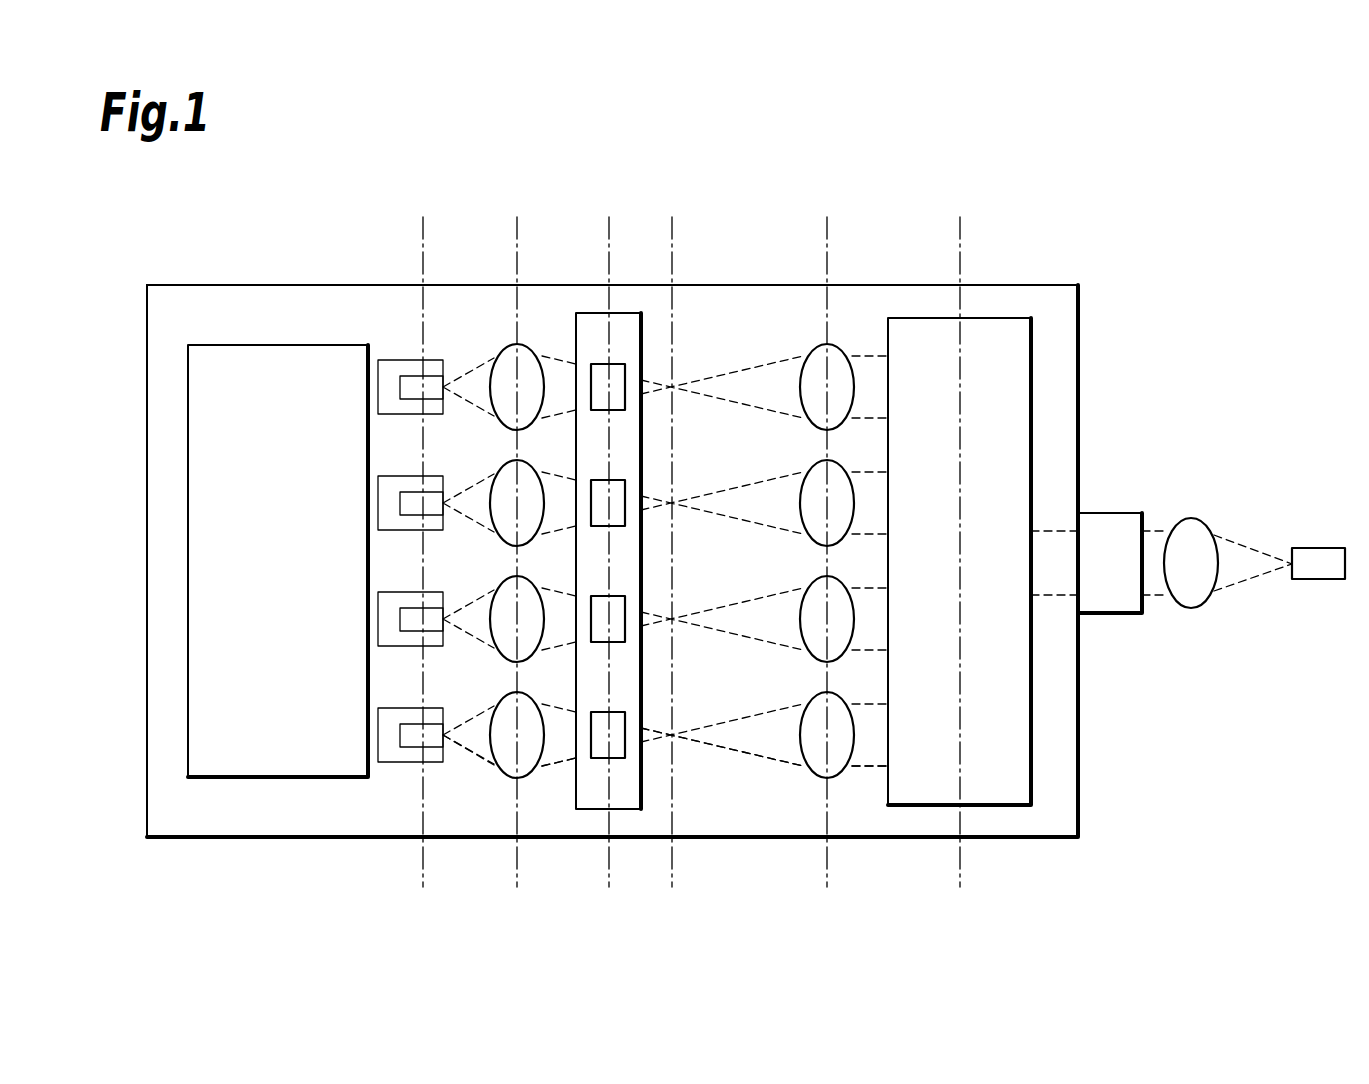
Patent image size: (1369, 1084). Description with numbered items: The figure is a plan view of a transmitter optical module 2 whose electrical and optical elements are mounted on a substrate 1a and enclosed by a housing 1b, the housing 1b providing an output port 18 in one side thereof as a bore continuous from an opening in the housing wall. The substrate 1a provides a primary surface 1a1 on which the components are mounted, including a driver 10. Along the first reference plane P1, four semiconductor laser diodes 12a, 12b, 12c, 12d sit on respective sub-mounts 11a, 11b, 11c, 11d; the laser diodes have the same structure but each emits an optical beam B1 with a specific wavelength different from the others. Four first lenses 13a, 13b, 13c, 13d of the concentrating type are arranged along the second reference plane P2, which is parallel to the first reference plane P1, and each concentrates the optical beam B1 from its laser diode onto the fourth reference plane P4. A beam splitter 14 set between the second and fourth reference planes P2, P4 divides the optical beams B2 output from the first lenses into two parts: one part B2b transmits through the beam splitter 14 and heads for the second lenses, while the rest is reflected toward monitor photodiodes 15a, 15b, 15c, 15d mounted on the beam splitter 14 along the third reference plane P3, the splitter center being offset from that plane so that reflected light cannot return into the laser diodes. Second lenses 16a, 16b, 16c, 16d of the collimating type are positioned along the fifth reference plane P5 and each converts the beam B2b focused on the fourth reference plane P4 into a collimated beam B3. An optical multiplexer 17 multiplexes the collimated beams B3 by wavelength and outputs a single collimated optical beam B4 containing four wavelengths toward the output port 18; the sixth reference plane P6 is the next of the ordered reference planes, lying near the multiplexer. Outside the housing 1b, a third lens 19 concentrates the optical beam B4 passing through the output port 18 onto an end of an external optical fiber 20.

The substrate 1a is at (183, 296).
The primary surface 1a1 is at (252, 296).
The housing 1b is at (147, 658).
The transmitter optical module 2 is at (1086, 219).
The driver 10 is at (210, 777).
The sub-mount 11a is at (369, 732).
The sub-mount 11b is at (369, 616).
The sub-mount 11c is at (369, 500).
The sub-mount 11d is at (383, 365).
The semiconductor laser diode 12a is at (369, 744).
The semiconductor laser diode 12b is at (369, 628).
The semiconductor laser diode 12c is at (369, 512).
The semiconductor laser diode 12d is at (408, 393).
The first lens 13a is at (502, 713).
The first lens 13b is at (502, 597).
The first lens 13c is at (502, 481).
The first lens 13d is at (504, 362).
The beam splitter 14 is at (637, 313).
The monitor photodiode 15a is at (659, 722).
The monitor photodiode 15b is at (659, 606).
The monitor photodiode 15c is at (658, 490).
The monitor photodiode 15d is at (617, 379).
The second lens 16a is at (812, 714).
The second lens 16b is at (812, 598).
The second lens 16c is at (812, 482).
The second lens 16d is at (814, 362).
The optical multiplexer 17 is at (1003, 318).
The output port 18 is at (1110, 513).
The third lens 19 is at (1191, 518).
The external optical fiber 20 is at (1321, 548).
The optical beam B1 is at (465, 748).
The optical beam B2 is at (553, 763).
The optical beam B2b is at (745, 754).
The collimated beam B3 is at (862, 768).
The single optical beam B4 is at (1055, 596).
The first reference plane P1 is at (423, 230).
The second reference plane P2 is at (517, 230).
The third reference plane P3 is at (609, 230).
The fourth reference plane P4 is at (672, 230).
The fifth reference plane P5 is at (827, 230).
The sixth reference plane P6 is at (960, 230).